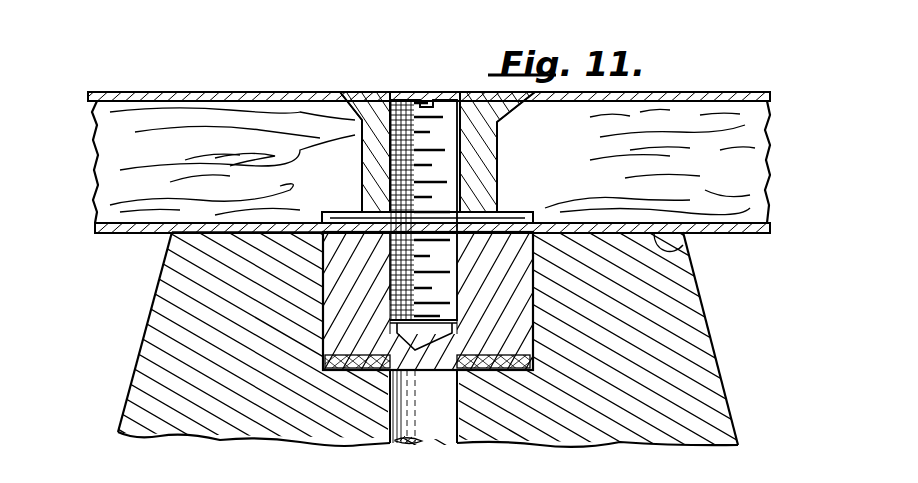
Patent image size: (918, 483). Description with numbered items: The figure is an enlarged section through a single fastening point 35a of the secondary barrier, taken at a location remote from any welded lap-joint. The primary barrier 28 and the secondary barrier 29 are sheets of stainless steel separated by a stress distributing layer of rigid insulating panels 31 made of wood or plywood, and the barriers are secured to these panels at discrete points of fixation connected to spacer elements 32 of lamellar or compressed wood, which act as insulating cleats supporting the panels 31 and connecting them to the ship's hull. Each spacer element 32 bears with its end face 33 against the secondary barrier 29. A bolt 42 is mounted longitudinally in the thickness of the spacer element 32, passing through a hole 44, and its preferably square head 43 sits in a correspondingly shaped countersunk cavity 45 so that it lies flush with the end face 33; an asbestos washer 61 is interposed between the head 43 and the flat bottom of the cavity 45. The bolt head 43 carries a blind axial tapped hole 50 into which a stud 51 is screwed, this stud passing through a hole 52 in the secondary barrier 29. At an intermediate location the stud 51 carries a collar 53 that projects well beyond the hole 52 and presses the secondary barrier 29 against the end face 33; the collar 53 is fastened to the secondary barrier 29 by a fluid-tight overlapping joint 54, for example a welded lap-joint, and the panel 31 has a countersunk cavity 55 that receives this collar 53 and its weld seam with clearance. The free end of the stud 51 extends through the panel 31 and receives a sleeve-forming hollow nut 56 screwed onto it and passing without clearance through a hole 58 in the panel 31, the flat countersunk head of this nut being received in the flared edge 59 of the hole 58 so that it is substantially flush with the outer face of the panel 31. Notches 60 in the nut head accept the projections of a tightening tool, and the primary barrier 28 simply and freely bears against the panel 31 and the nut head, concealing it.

The primary barrier 28 is at (705, 97).
The secondary barrier 29 is at (121, 236).
The panel 31 is at (755, 234).
The spacer element 32 is at (706, 395).
The end face 33 is at (668, 251).
The fastening point 35a is at (463, 91).
The bolt 42 is at (403, 437).
The bolt head 43 is at (245, 310).
The hole 44 is at (454, 390).
The cavity 45 is at (536, 329).
The blind axial tapped hole 50 is at (448, 279).
The stud 51 is at (456, 190).
The hole 52 is at (389, 237).
The collar 53 is at (518, 212).
The peripheral assembly joint 54 is at (343, 212).
The cavity 55 is at (322, 219).
The hollow nut 56 is at (362, 108).
The hole 58 is at (502, 152).
The flared edge 59 is at (340, 111).
The notches 60 is at (427, 99).
The asbestos washer 61 is at (346, 369).